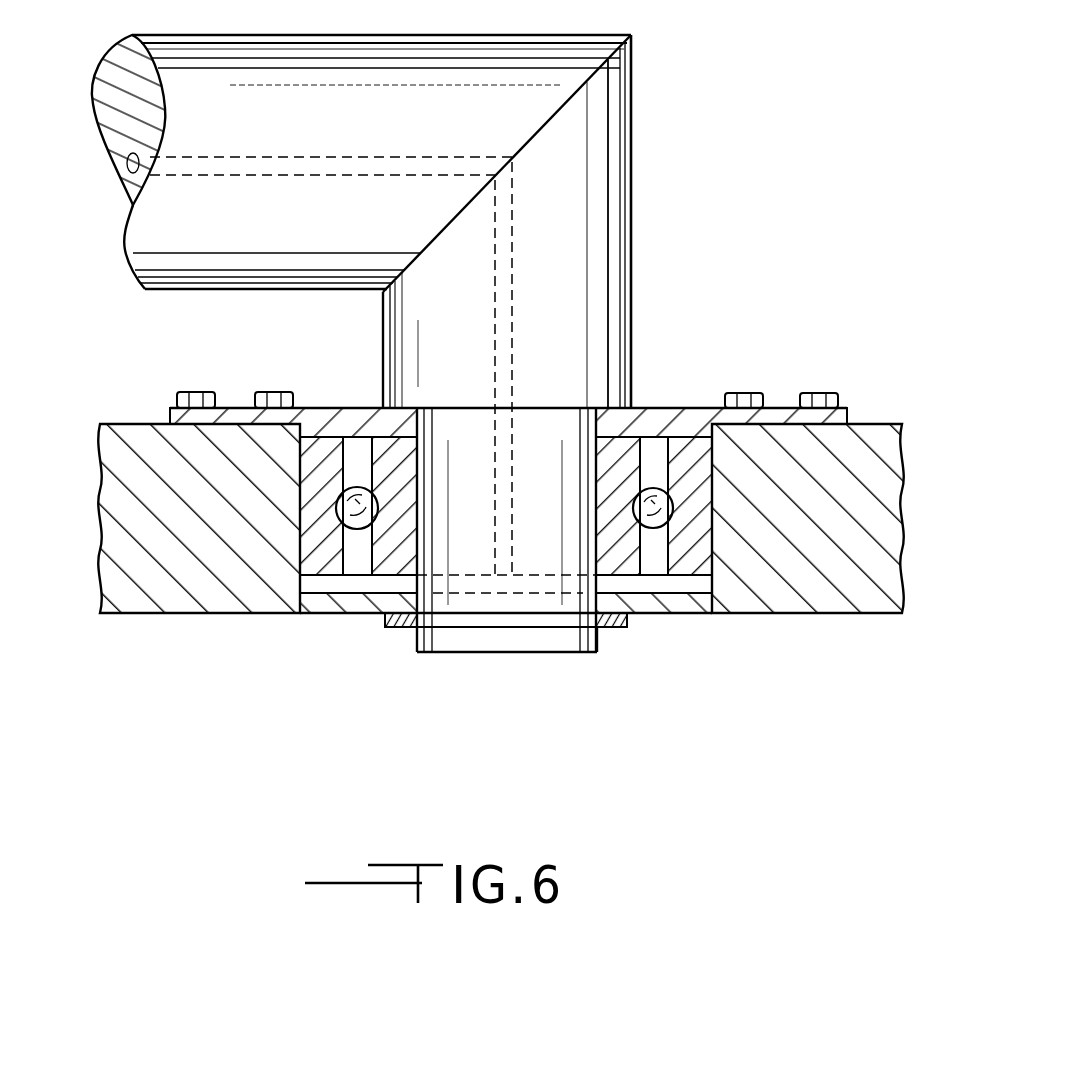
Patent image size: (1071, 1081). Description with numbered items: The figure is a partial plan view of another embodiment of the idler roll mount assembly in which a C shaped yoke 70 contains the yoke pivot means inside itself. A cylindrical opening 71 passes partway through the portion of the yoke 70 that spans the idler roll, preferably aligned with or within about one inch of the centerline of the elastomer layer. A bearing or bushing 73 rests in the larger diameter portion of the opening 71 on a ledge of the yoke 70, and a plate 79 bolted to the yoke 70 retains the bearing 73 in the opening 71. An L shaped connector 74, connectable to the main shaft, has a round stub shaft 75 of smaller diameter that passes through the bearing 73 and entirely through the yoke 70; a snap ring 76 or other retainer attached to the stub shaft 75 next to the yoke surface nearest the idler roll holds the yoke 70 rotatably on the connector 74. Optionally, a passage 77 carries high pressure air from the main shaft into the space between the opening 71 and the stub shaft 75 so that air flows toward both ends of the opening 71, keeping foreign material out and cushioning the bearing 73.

The C shaped yoke 70 is at (187, 567).
The cylindrical opening 71 is at (296, 594).
The bearing 73 is at (343, 515).
The L shaped connector 74 is at (600, 208).
The stub shaft 75 is at (502, 640).
The snap ring 76 is at (610, 630).
The passage 77 is at (440, 157).
The plate 79 is at (233, 407).